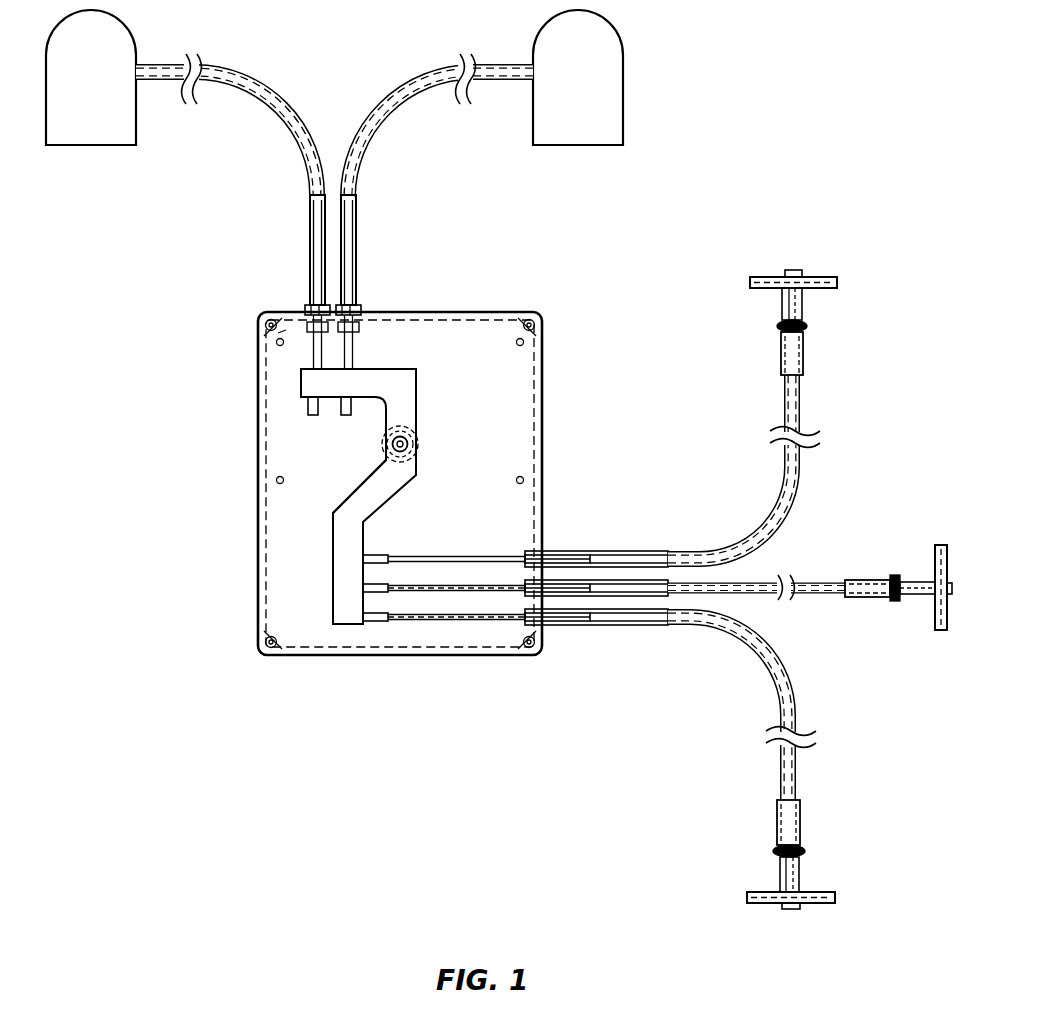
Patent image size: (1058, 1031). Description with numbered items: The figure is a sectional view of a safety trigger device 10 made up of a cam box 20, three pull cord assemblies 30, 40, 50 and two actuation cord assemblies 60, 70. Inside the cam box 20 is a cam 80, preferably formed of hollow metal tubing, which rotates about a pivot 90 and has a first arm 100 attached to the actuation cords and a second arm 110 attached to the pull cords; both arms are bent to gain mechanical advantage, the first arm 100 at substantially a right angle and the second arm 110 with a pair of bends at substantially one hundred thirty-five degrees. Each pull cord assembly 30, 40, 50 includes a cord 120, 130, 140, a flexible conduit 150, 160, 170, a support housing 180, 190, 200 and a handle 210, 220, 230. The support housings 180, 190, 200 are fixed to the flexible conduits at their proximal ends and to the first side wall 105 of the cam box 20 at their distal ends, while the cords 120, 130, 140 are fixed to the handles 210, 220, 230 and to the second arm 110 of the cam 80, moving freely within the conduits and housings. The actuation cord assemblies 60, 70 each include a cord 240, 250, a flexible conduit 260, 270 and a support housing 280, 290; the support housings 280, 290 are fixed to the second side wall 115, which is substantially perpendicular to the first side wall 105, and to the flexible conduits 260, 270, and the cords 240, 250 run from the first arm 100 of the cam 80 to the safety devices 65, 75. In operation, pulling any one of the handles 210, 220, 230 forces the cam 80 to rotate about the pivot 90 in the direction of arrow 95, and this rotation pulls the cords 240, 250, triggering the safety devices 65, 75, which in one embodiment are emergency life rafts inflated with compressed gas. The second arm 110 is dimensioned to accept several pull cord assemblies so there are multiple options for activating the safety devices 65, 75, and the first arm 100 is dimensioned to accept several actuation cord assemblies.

The safety trigger device 10 is at (410, 434).
The cam box 20 is at (445, 468).
The pull cord assembly 30 is at (785, 414).
The pull cord assembly 40 is at (810, 602).
The pull cord assembly 50 is at (755, 763).
The actuation cord assembly 60 is at (233, 184).
The safety device 65 is at (108, 91).
The actuation cord assembly 70 is at (434, 184).
The safety device 75 is at (594, 91).
The cam 80 is at (319, 496).
The pivot 90 is at (422, 444).
The arrow 95 is at (358, 472).
The first arm 100 is at (322, 479).
The first side wall 105 is at (545, 405).
The second arm 110 is at (322, 555).
The second side wall 115 is at (463, 312).
The cord 120 is at (397, 555).
The cord 130 is at (487, 580).
The cord 140 is at (428, 620).
The flexible conduit 150 is at (788, 482).
The flexible conduit 160 is at (823, 594).
The flexible conduit 170 is at (760, 679).
The support housing 180 is at (588, 560).
The support housing 190 is at (584, 596).
The support housing 200 is at (565, 625).
The handle 210 is at (833, 308).
The handle 220 is at (912, 556).
The handle 230 is at (830, 855).
The cord 240 is at (312, 345).
The cord 250 is at (360, 330).
The flexible conduit 260 is at (272, 112).
The flexible conduit 270 is at (383, 120).
The support housing 280 is at (312, 240).
The support housing 290 is at (356, 240).